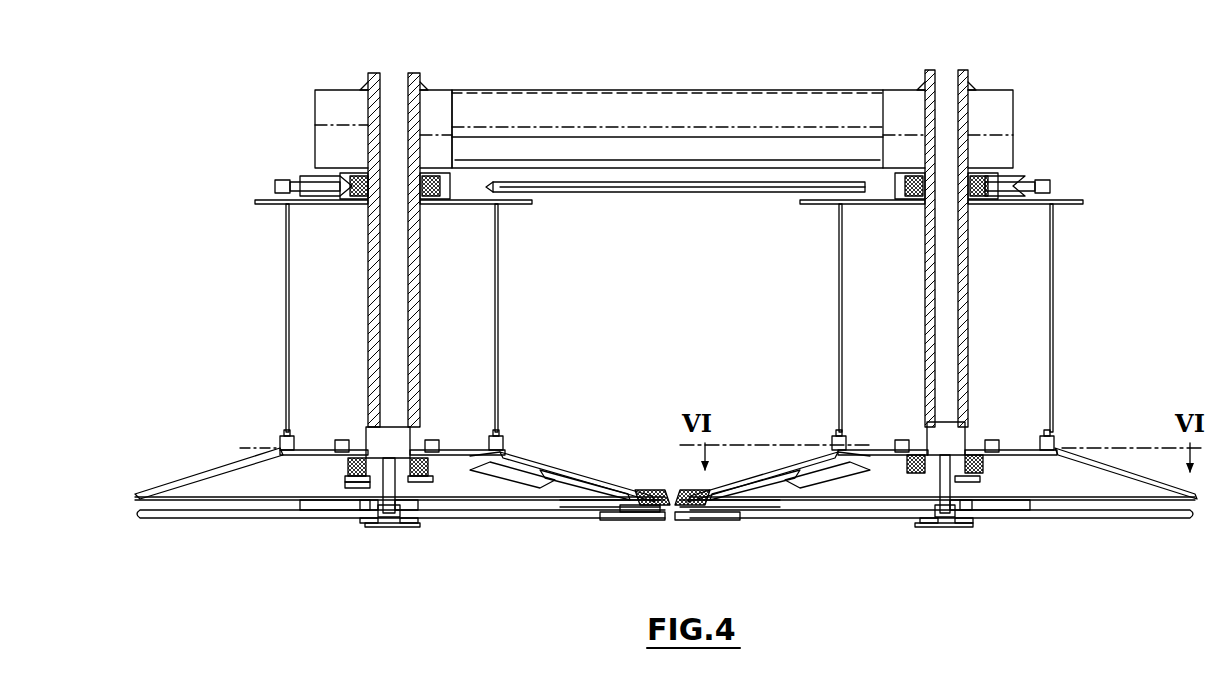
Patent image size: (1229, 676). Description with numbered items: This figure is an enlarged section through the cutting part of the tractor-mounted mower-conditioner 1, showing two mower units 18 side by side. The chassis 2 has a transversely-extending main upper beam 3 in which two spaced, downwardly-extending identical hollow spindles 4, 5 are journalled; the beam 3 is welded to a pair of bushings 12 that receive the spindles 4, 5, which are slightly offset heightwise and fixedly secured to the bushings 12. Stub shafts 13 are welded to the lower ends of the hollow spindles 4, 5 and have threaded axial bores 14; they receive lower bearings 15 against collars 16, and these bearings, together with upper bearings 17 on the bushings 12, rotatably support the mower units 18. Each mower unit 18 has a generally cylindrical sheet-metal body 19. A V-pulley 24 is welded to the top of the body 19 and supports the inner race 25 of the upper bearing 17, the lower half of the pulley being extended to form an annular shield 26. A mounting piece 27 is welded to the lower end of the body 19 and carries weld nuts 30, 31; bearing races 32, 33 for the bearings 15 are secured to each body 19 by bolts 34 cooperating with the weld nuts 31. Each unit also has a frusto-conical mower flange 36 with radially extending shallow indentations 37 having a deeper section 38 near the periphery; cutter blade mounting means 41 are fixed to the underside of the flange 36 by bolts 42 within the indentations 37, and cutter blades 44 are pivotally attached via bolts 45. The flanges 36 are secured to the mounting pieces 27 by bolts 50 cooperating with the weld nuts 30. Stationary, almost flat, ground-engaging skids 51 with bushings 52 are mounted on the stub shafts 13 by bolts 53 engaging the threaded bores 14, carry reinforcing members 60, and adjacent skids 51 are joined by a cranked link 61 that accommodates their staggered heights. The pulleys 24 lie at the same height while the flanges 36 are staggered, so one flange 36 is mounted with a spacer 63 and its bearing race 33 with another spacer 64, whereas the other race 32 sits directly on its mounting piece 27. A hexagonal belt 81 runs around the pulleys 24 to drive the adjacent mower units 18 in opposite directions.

The mower-conditioner 1 is at (1003, 85).
The chassis 2 is at (508, 90).
The main upper beam 3 is at (605, 90).
The hollow spindle 4 is at (414, 82).
The hollow spindle 5 is at (968, 80).
The bushing 12 is at (366, 88).
The stub shaft 13 is at (410, 430).
The threaded axial bore 14 is at (380, 515).
The lower bearing 15 is at (398, 518).
The collar 16 is at (430, 452).
The upper bearing 17 is at (430, 202).
The mower unit 18 is at (510, 285).
The cylindrical body 19 is at (286, 272).
The V-pulley 24 is at (318, 183).
The inner race 25 is at (352, 200).
The annular shield 26 is at (266, 203).
The mounting piece 27 is at (340, 450).
The weld nut 30 is at (1095, 425).
The weld nut 31 is at (288, 436).
The bearing race 32 is at (968, 482).
The bearing race 33 is at (365, 510).
The bolt 34 is at (365, 522).
The mower flange 36 is at (195, 478).
The indentation 37 is at (572, 480).
The deeper section 38 is at (620, 490).
The cutter blade mounting means 41 is at (585, 510).
The bolt 42 is at (520, 500).
The cutter blade 44 is at (632, 522).
The bolt 45 is at (600, 505).
The bolt 50 is at (210, 510).
The skid 51 is at (335, 518).
The bushing 52 is at (402, 510).
The bolt 53 is at (385, 527).
The reinforcing member 60 is at (305, 508).
The link 61 is at (645, 514).
The spacer 63 is at (350, 482).
The spacer 64 is at (350, 488).
The hexagonal belt 81 is at (682, 198).